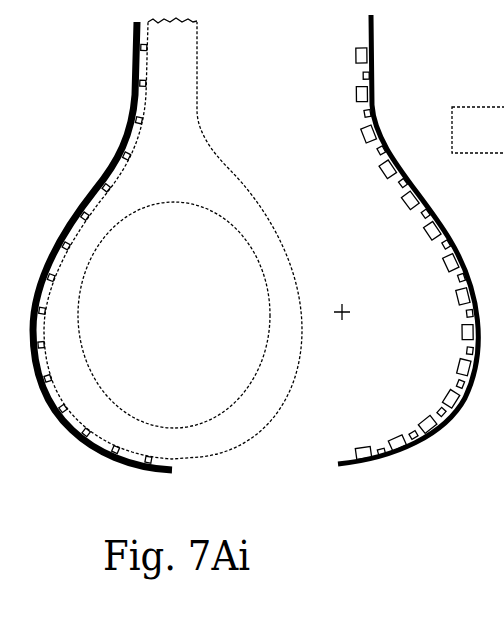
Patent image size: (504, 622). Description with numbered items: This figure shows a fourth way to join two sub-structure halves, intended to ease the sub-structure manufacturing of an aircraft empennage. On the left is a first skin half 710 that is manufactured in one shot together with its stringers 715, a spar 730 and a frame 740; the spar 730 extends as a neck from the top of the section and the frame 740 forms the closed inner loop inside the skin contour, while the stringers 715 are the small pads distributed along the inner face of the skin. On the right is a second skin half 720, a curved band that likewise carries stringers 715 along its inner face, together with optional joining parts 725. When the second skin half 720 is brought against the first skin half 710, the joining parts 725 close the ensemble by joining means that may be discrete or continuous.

The first skin half 710 is at (133, 62).
The stringers 715 is at (123, 152).
The second skin half 720 is at (373, 28).
The joining parts 725 is at (433, 418).
The spars 730 is at (188, 66).
The frames 740 is at (207, 442).